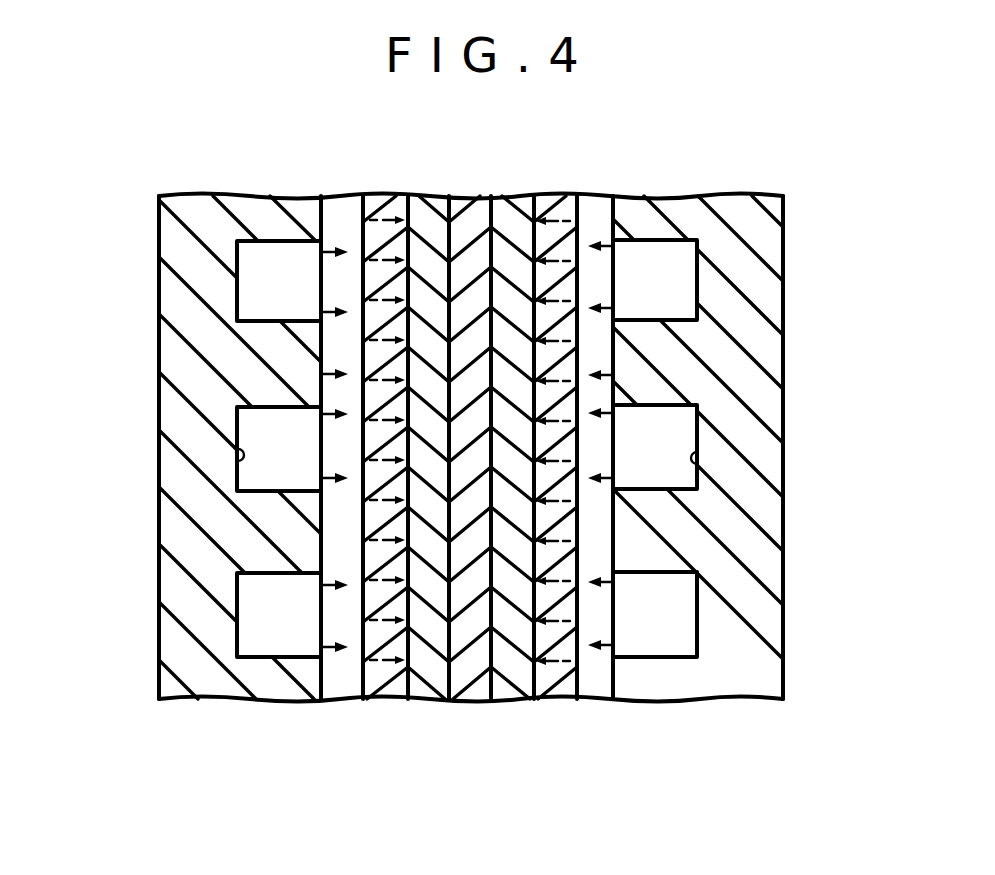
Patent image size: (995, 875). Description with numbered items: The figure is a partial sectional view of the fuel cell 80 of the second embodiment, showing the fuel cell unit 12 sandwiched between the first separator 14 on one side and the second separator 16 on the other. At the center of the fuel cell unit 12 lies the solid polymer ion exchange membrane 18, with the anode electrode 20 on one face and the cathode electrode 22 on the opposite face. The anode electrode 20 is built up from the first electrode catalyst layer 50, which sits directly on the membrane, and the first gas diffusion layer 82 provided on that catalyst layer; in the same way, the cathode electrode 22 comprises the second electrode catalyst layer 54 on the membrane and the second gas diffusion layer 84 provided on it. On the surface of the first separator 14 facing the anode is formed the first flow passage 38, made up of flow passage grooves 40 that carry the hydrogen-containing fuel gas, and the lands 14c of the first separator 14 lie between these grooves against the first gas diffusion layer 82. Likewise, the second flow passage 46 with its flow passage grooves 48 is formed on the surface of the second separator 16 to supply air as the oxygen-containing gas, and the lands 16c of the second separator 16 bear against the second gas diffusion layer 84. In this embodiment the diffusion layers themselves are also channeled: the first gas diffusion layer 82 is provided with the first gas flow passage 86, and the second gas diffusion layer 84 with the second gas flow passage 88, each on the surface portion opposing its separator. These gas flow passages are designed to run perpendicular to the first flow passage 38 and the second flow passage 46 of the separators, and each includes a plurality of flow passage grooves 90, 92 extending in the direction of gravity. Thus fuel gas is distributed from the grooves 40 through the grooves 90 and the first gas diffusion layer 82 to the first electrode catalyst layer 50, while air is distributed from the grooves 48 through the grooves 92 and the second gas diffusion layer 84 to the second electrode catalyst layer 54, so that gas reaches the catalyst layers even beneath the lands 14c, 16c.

The fuel cell 80 is at (716, 108).
The fuel cell unit 12 is at (496, 479).
The first separator 14 is at (771, 178).
The lands 14c is at (613, 538).
The second separator 16 is at (203, 181).
The lands 16c is at (321, 540).
The solid polymer ion exchange membrane 18 is at (473, 210).
The anode electrode 20 is at (560, 479).
The cathode electrode 22 is at (408, 479).
The first flow passage 38 is at (708, 261).
The flow passage grooves 40 is at (698, 458).
The second flow passage 46 is at (231, 244).
The flow passage grooves 48 is at (240, 455).
The first electrode catalyst layer 50 is at (512, 687).
The second electrode catalyst layer 54 is at (428, 687).
The first gas diffusion layer 82 is at (557, 690).
The second gas diffusion layer 84 is at (383, 680).
The first gas flow passage 86 is at (613, 375).
The second gas flow passage 88 is at (321, 372).
The flow passage grooves 90 is at (593, 690).
The flow passage grooves 92 is at (343, 680).